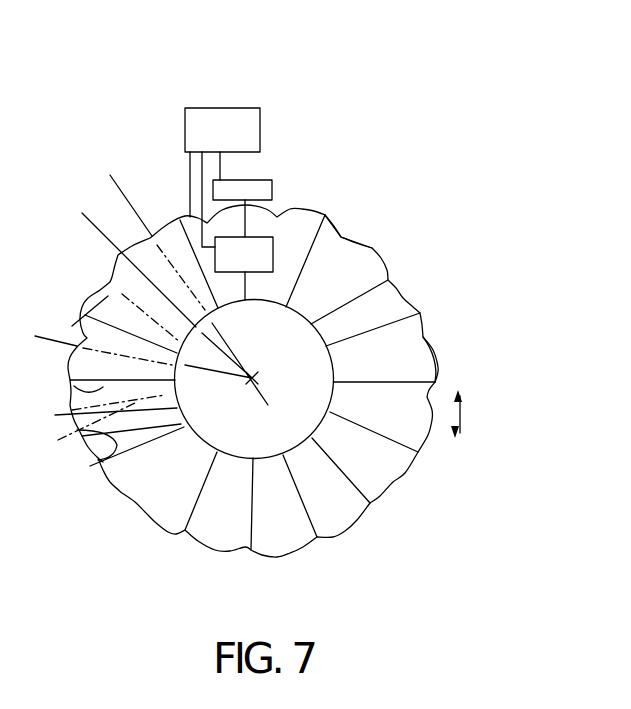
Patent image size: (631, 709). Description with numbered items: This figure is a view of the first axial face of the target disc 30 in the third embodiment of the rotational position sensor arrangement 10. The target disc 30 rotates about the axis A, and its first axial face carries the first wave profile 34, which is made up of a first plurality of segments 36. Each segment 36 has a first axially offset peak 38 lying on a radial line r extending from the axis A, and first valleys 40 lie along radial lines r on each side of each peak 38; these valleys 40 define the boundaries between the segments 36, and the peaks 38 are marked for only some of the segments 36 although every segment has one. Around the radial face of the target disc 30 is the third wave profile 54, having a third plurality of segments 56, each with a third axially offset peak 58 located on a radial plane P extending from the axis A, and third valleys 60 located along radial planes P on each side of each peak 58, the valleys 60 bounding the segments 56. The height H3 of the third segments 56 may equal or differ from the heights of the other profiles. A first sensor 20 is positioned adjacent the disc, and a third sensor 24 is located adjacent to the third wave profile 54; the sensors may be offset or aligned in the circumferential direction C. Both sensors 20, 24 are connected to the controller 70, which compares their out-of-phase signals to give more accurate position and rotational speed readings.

The rotational position sensor arrangement 10 is at (414, 119).
The first sensor 20 is at (267, 247).
The third sensor 24 is at (262, 187).
The controller 70 is at (247, 117).
The target disc 30 is at (388, 482).
The first wave profile 34 is at (217, 530).
The first plurality of segments 36 is at (55, 415).
The first axially offset peak 38 is at (58, 440).
The first valleys 40 is at (87, 380).
The third wave profile 54 is at (420, 312).
The third plurality of segments 56 is at (372, 248).
The third axially offset peak 58 is at (390, 278).
The third valleys 60 is at (363, 243).
The axis A is at (255, 375).
The circumferential direction C is at (460, 413).
The radial plane P is at (127, 184).
The radial line r is at (88, 223).
The height of the third plurality of segments H3 is at (115, 337).